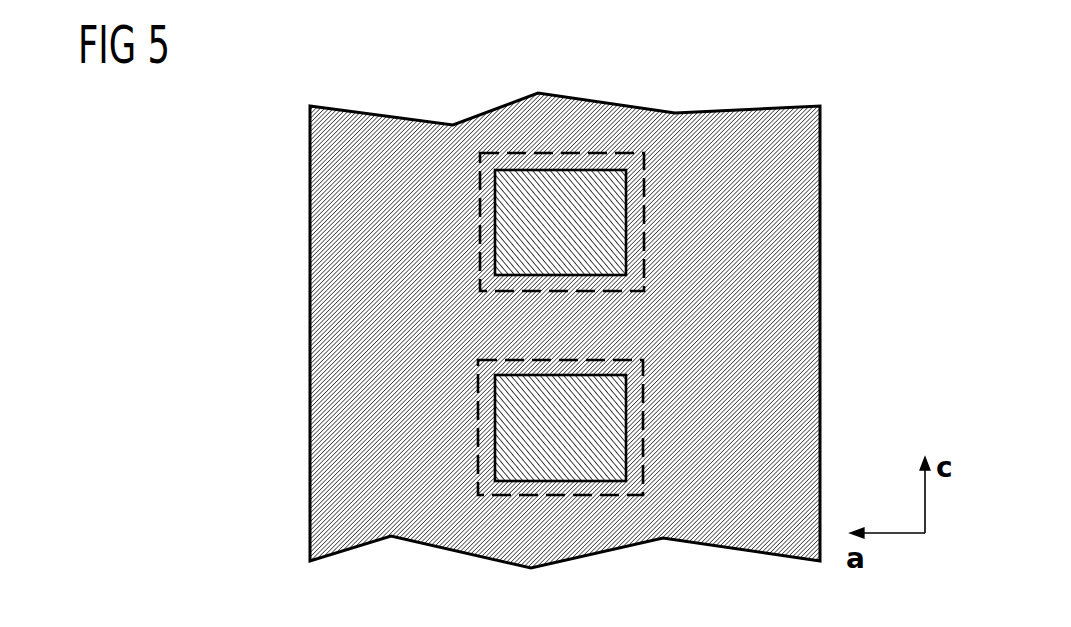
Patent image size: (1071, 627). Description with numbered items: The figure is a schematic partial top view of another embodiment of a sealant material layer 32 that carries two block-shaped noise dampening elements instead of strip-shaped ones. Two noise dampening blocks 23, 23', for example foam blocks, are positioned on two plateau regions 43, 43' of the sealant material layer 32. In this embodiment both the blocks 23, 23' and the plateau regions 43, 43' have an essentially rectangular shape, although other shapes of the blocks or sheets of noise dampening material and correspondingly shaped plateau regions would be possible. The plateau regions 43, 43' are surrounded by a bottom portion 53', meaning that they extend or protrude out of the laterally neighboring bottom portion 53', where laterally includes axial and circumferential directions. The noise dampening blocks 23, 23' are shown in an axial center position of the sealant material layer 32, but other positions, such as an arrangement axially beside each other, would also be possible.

The sealant material layer 32 is at (522, 330).
The bottom portion 53' is at (565, 307).
The noise dampening block 23 is at (560, 162).
The plateau region 43 is at (562, 166).
The noise dampening block 23' is at (560, 493).
The plateau region 43' is at (560, 489).